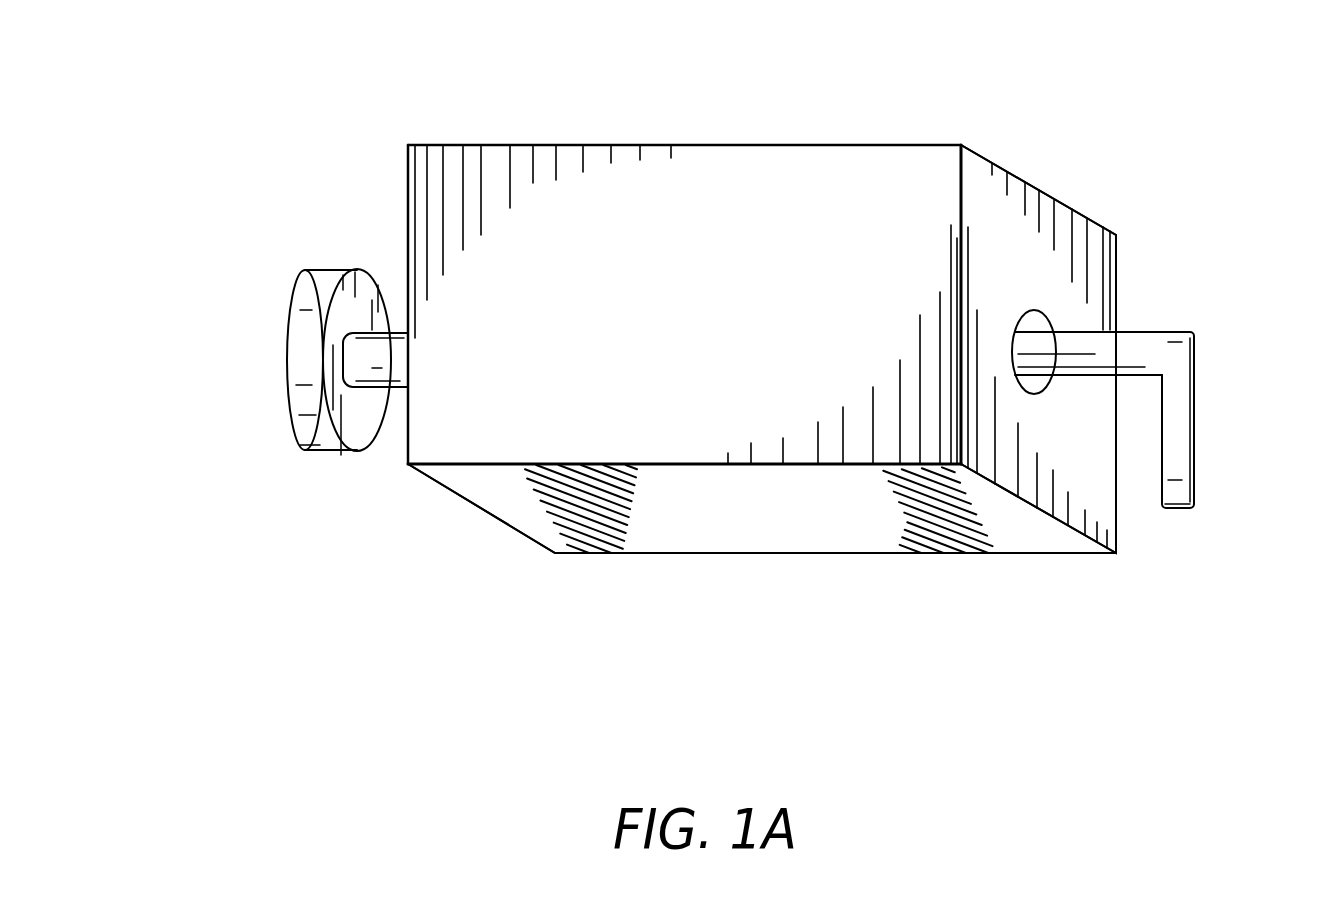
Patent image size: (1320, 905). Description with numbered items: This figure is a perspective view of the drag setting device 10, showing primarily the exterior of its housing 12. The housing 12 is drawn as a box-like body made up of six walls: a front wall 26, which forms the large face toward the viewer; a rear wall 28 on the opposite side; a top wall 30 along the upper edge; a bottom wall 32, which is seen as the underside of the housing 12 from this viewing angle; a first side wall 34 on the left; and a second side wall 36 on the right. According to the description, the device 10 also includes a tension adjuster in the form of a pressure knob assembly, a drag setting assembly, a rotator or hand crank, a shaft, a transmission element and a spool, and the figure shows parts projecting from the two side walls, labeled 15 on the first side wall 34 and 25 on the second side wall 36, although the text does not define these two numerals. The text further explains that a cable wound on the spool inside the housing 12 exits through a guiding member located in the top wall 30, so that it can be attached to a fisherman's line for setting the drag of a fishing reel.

The drag setting device 10 is at (828, 104).
The housing 12 is at (960, 142).
The knob 15 is at (297, 335).
The crank handle 25 is at (1196, 393).
The front wall 26 is at (718, 331).
The rear wall 28 is at (846, 553).
The top wall 30 is at (675, 145).
The bottom wall 32 is at (680, 517).
The first side wall 34 is at (407, 220).
The second side wall 36 is at (1033, 185).